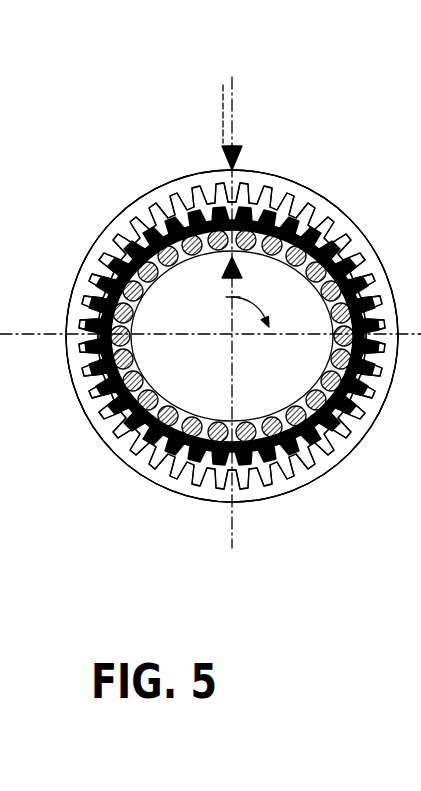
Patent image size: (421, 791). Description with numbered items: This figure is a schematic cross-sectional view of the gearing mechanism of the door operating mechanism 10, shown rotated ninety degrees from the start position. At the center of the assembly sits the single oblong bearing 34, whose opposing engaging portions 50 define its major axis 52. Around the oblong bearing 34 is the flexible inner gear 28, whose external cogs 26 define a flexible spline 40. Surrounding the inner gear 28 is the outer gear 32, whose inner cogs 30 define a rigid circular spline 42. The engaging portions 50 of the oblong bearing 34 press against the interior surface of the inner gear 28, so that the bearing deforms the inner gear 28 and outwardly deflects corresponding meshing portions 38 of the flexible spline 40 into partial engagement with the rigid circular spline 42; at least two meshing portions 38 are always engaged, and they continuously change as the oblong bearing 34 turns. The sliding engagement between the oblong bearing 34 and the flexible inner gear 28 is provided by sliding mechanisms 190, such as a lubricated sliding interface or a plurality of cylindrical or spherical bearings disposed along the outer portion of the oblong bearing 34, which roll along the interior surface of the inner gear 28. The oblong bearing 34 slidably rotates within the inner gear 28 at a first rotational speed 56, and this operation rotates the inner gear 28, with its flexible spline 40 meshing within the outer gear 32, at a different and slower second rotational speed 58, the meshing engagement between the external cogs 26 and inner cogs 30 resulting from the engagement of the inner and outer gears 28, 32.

The door operating mechanism 10 is at (108, 82).
The external cogs 26 is at (221, 474).
The inner gear 28 is at (135, 458).
The inner cogs 30 is at (232, 278).
The outer gear 32 is at (123, 218).
The oblong bearing 34 is at (243, 400).
The meshing portions 38 is at (388, 298).
The flexible spline 40 is at (220, 313).
The rigid circular spline 42 is at (76, 407).
The engaging portions 50 is at (389, 350).
The major axis 52 is at (220, 349).
The first rotational speed 56 is at (245, 300).
The second rotational speed 58 is at (223, 108).
The sliding mechanisms 190 is at (327, 438).